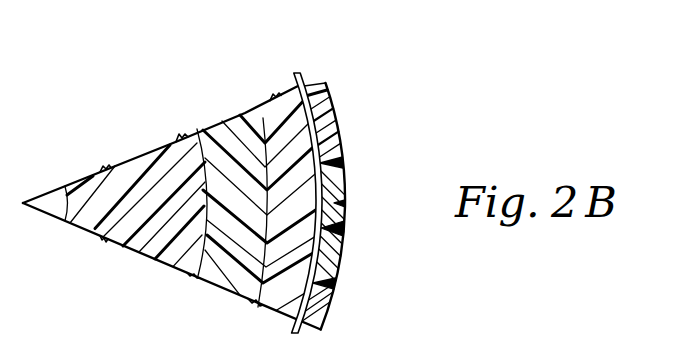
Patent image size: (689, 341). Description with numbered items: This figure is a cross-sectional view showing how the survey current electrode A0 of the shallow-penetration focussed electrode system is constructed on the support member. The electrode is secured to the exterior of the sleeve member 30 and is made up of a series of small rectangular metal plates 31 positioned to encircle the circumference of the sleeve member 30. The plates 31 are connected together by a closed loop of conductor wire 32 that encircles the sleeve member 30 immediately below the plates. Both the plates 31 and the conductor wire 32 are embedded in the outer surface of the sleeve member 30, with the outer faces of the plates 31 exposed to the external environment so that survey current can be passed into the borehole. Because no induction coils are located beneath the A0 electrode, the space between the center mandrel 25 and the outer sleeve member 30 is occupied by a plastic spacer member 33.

The center mandrel 25 is at (130, 172).
The plastic spacer member 33 is at (220, 135).
The sleeve member 30 is at (336, 119).
The rectangular metal plates 31 is at (326, 84).
The conductor wire 32 is at (299, 72).
The survey current electrode A0 is at (346, 175).